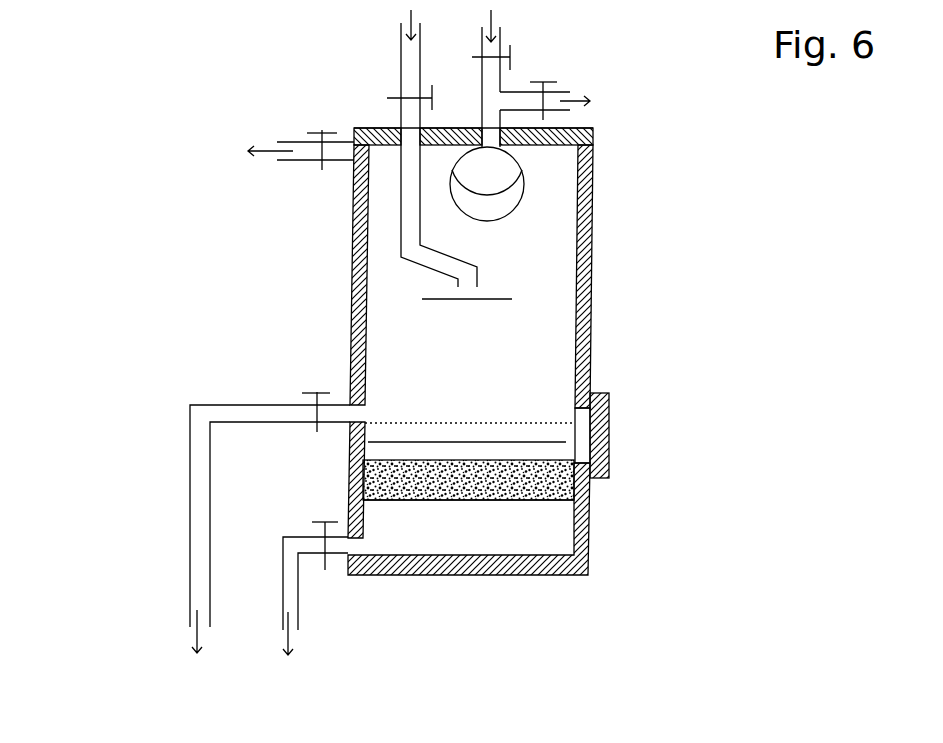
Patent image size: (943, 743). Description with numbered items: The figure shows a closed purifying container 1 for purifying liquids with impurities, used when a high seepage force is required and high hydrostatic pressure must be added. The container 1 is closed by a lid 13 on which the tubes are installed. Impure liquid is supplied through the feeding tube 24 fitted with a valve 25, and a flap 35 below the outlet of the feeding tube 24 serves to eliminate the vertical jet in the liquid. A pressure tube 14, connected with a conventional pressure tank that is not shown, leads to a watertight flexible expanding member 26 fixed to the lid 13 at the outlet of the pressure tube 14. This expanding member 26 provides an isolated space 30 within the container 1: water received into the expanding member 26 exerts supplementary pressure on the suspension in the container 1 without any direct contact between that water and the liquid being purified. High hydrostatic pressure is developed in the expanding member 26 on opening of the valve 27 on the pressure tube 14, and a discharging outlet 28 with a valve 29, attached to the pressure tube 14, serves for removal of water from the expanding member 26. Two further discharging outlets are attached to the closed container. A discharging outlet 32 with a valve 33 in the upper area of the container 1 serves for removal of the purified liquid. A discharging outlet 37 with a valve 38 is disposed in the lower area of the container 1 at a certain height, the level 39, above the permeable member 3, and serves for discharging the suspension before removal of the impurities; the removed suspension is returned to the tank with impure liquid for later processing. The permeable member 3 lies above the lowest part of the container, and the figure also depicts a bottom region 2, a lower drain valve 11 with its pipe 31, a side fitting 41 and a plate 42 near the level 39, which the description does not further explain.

The container 1 is at (558, 290).
The bottom chamber 2 is at (530, 548).
The permeable member 3 is at (580, 493).
The drain valve 11 is at (325, 570).
The lid 13 is at (362, 120).
The pressure tube 14 is at (505, 33).
The feeding tube 24 is at (395, 63).
The valve 25 is at (380, 98).
The expanding member 26 is at (523, 207).
The valve 27 is at (517, 62).
The outlet 28 is at (573, 115).
The valve 29 is at (563, 82).
The isolated space 30 is at (501, 195).
The drain pipe 31 is at (285, 537).
The discharging outlet 32 is at (290, 172).
The valve 33 is at (318, 182).
The flap 35 is at (493, 307).
The discharging outlet 37 is at (184, 432).
The valve 38 is at (310, 390).
The level 39 is at (469, 409).
The flange connector 41 is at (617, 435).
The sieve plate 42 is at (402, 433).